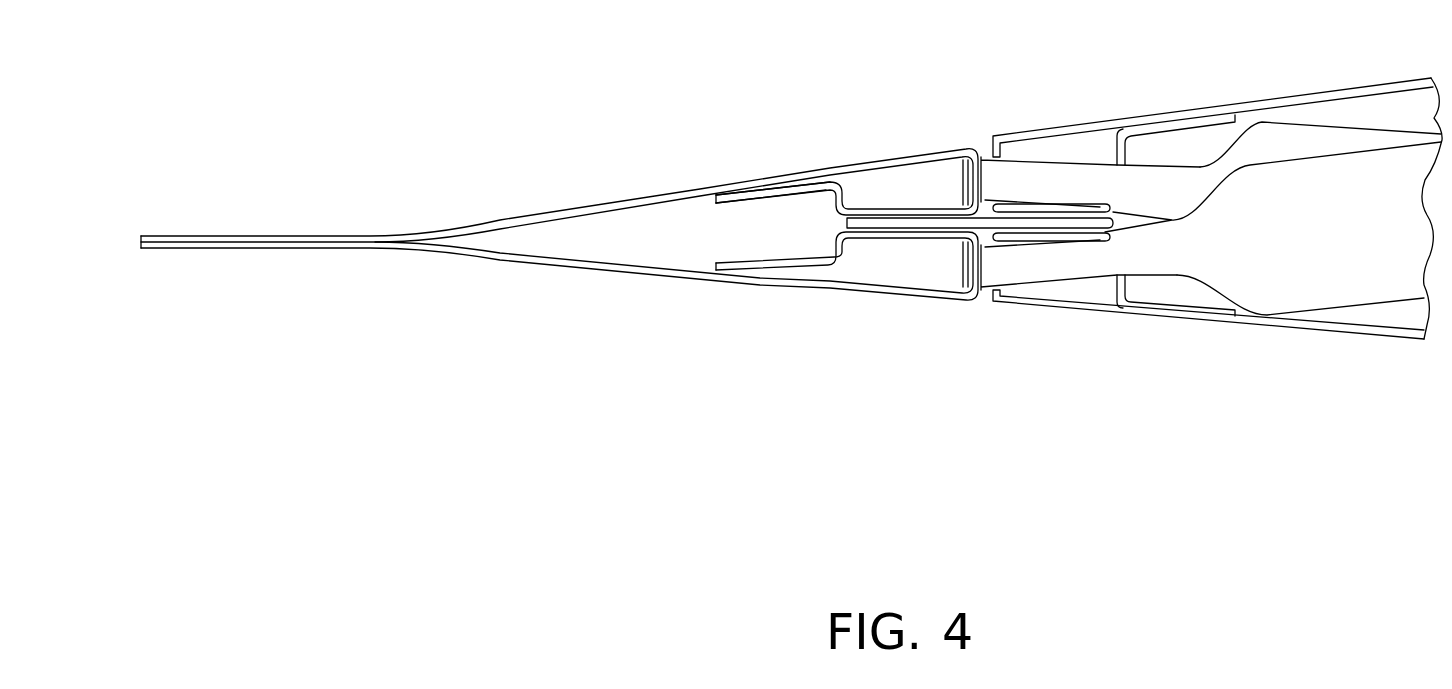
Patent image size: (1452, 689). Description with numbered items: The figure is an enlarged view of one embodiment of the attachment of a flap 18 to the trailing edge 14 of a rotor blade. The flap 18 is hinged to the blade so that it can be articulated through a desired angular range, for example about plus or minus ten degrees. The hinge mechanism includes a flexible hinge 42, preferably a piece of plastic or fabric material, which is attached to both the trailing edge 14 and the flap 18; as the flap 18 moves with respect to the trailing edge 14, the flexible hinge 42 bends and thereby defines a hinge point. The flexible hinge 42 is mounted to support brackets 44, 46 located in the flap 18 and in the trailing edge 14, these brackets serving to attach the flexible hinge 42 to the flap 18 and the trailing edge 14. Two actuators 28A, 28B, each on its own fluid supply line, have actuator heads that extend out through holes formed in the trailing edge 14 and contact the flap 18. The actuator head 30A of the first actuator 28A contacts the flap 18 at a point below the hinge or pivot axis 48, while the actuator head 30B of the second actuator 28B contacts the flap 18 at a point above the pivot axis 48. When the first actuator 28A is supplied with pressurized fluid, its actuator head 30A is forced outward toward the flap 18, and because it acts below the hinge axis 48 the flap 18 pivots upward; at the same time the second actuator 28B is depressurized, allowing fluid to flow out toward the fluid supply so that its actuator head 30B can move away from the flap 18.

The trailing edge 14 is at (1343, 98).
The flap 18 is at (515, 215).
The first actuator 28A is at (1325, 280).
The second actuator 28B is at (1283, 137).
The actuator head of the first actuator 30A is at (1023, 267).
The actuator head of the second actuator 30B is at (1056, 177).
The flexible hinge 42 is at (901, 220).
The support bracket 44 is at (849, 190).
The support bracket 46 is at (1118, 310).
The hinge or pivot axis 48 is at (978, 223).